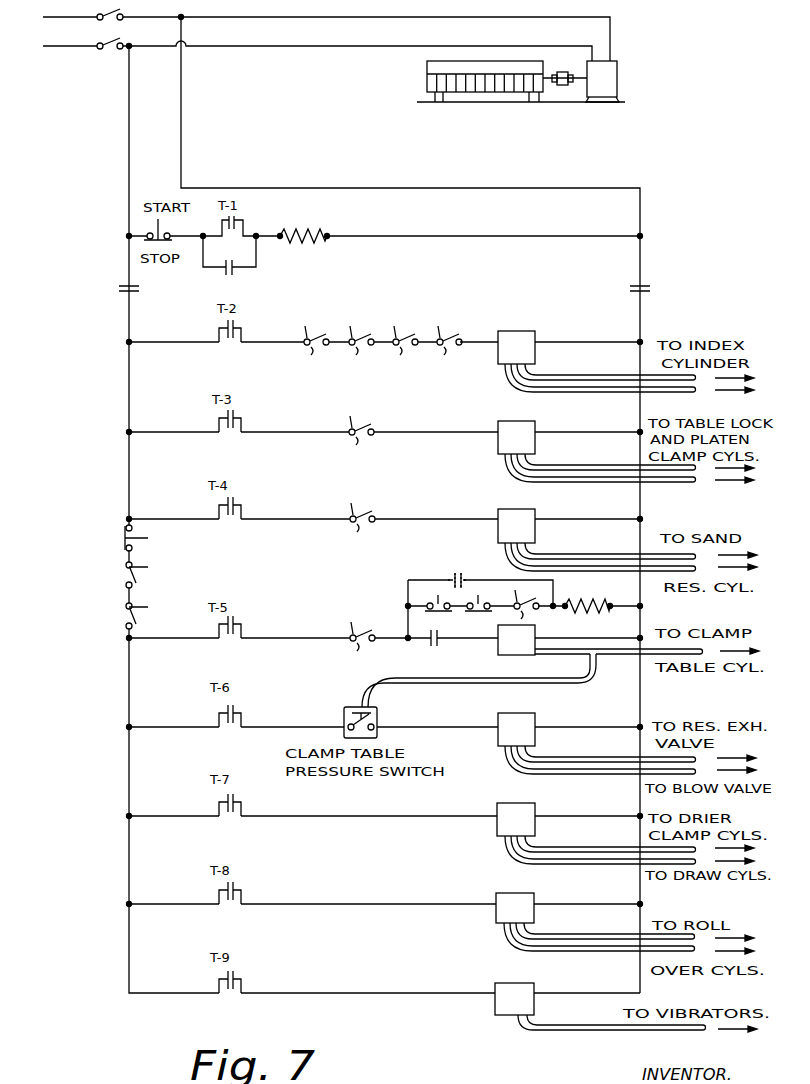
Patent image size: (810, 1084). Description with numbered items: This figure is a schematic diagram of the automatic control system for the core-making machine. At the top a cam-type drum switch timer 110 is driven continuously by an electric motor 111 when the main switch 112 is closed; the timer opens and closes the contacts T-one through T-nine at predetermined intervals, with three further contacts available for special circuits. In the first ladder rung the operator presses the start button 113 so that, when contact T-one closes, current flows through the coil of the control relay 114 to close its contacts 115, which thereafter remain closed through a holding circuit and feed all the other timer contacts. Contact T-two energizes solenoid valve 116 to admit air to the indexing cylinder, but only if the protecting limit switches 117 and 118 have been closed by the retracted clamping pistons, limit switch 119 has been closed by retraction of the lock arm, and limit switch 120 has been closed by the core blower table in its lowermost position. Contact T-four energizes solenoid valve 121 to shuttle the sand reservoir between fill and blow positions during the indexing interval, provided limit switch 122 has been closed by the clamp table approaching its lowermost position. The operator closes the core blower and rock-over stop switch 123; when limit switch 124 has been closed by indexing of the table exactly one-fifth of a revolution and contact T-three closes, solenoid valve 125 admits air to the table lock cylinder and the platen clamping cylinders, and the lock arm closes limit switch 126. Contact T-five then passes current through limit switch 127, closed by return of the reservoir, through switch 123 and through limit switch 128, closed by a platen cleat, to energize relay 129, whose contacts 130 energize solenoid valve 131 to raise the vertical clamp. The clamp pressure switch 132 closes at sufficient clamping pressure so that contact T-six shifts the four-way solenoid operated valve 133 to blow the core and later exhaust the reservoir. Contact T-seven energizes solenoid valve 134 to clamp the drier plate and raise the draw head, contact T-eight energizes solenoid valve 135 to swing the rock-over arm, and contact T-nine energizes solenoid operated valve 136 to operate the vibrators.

The timer 110 is at (427, 66).
The electric motor 111 is at (620, 78).
The main switch 112 is at (104, 53).
The start button 113 is at (150, 225).
The control relay 114 is at (305, 230).
The contacts 115 is at (145, 288).
The solenoid valve 116 is at (512, 331).
The protecting limit switch 117 is at (308, 352).
The protecting limit switch 118 is at (357, 352).
The limit switch 119 is at (403, 352).
The limit switch 120 is at (445, 352).
The solenoid valve 121 is at (506, 509).
The limit switch 122 is at (350, 524).
The core blower and rock-over stop switch 123 is at (124, 534).
The limit switch 124 is at (108, 611).
The solenoid valve 125 is at (506, 421).
The limit switch 126 is at (128, 568).
The limit switch 127 is at (350, 643).
The limit switch 128 is at (525, 610).
The relay 129 is at (596, 603).
The contacts 130 is at (464, 577).
The solenoid valve 131 is at (498, 646).
The clamp pressure switch 132 is at (344, 716).
The four-way solenoid operated valve 133 is at (535, 716).
The solenoid valve 134 is at (501, 803).
The solenoid valve 135 is at (500, 893).
The solenoid operated valve 136 is at (500, 983).